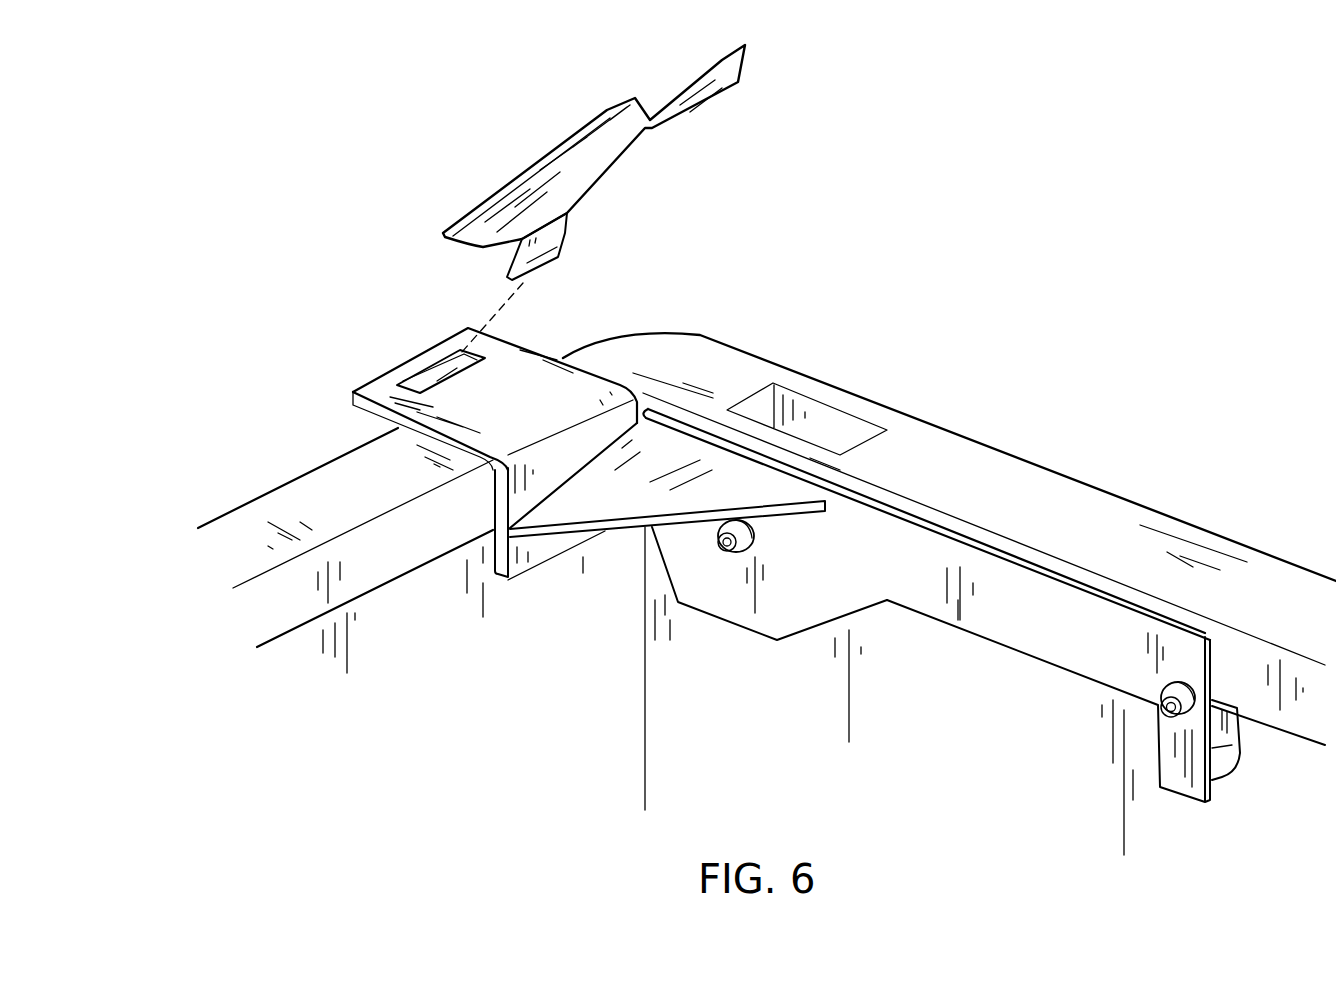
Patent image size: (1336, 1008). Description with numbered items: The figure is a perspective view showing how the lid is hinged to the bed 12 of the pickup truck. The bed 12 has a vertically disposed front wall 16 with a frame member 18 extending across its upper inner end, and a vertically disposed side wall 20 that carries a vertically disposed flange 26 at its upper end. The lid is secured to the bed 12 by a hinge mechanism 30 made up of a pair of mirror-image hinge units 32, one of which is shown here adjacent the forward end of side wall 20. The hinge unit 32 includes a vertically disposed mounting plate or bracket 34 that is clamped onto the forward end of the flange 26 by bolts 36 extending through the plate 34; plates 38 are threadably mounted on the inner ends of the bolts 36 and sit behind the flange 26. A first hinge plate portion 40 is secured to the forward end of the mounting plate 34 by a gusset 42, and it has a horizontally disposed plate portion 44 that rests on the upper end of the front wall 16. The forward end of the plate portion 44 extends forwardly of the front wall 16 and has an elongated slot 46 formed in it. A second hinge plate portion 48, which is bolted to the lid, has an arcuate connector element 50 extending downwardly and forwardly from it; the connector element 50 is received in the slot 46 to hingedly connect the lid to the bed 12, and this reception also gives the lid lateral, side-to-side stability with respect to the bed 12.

The bed 12 is at (977, 393).
The front wall 16 is at (296, 477).
The frame member 18 is at (392, 545).
The side wall 20 is at (1092, 486).
The flange 26 is at (1250, 643).
The hinge mechanism 30 is at (568, 352).
The hinge unit 32 is at (789, 625).
The mounting plate 34 is at (860, 590).
The bolts 36 is at (753, 535).
The plates 38 is at (1242, 733).
The first hinge plate portion 40 is at (542, 548).
The gusset 42 is at (608, 507).
The plate portion 44 is at (553, 397).
The elongated slot 46 is at (420, 385).
The second hinge plate portion 48 is at (638, 152).
The arcuate connector element 50 is at (563, 250).